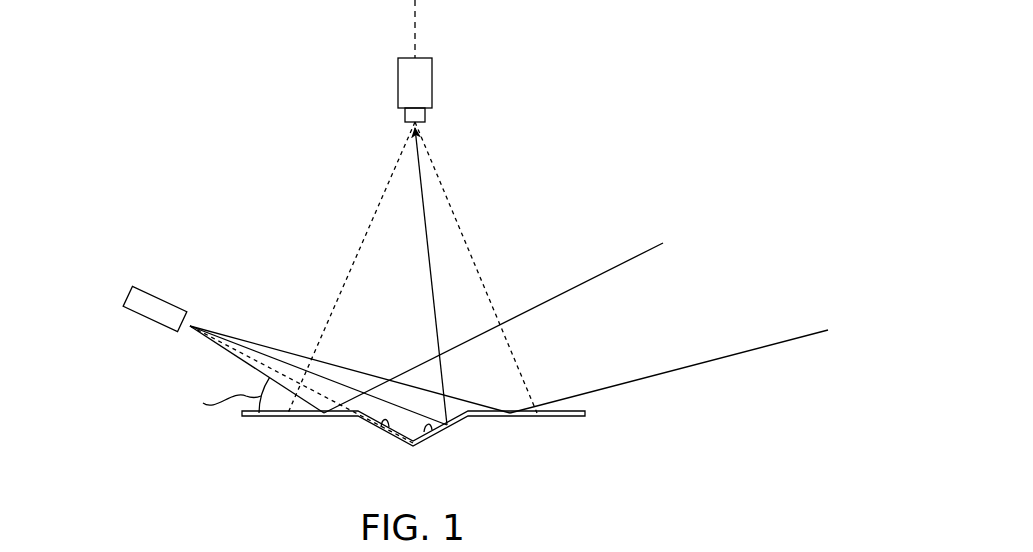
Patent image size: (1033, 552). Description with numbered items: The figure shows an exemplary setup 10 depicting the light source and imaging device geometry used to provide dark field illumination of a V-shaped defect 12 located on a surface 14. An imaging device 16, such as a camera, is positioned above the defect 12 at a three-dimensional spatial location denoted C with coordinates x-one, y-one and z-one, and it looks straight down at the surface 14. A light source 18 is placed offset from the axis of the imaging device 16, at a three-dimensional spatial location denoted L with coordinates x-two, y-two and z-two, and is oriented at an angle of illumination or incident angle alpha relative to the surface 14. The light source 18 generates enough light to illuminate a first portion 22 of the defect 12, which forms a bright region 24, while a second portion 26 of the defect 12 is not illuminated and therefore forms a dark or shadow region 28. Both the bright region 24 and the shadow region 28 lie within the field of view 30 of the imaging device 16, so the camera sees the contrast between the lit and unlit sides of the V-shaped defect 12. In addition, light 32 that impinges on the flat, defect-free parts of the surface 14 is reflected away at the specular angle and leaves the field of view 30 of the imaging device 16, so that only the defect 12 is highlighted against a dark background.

The setup 10 is at (195, 78).
The V-shaped defect 12 is at (508, 440).
The surface 14 is at (580, 407).
The imaging device 16 is at (418, 80).
The light source 18 is at (173, 303).
The first portion 22 is at (428, 424).
The bright region 24 is at (457, 384).
The second portion 26 is at (385, 418).
The shadow region 28 is at (385, 360).
The field of view 30 is at (387, 188).
The light 32 is at (655, 245).